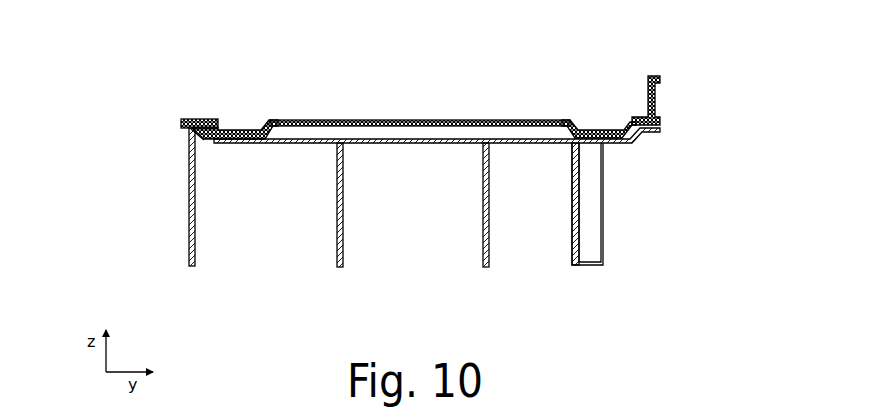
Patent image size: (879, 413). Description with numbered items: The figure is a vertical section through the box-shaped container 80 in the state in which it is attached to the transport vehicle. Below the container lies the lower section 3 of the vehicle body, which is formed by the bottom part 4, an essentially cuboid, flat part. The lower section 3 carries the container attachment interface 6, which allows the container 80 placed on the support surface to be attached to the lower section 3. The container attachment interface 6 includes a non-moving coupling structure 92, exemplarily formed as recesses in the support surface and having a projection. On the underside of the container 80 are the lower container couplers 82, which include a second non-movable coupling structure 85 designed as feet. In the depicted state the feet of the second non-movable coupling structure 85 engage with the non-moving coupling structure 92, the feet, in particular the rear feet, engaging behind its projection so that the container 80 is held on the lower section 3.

The lower section 3 is at (190, 242).
The bottom part 4 is at (124, 197).
The container attachment interface 6 is at (249, 143).
The non-moving coupling structure 92 is at (400, 142).
The box-shaped container 80 is at (657, 99).
The lower container couplers 82 is at (235, 137).
The second non-movable coupling structure 85 is at (414, 90).